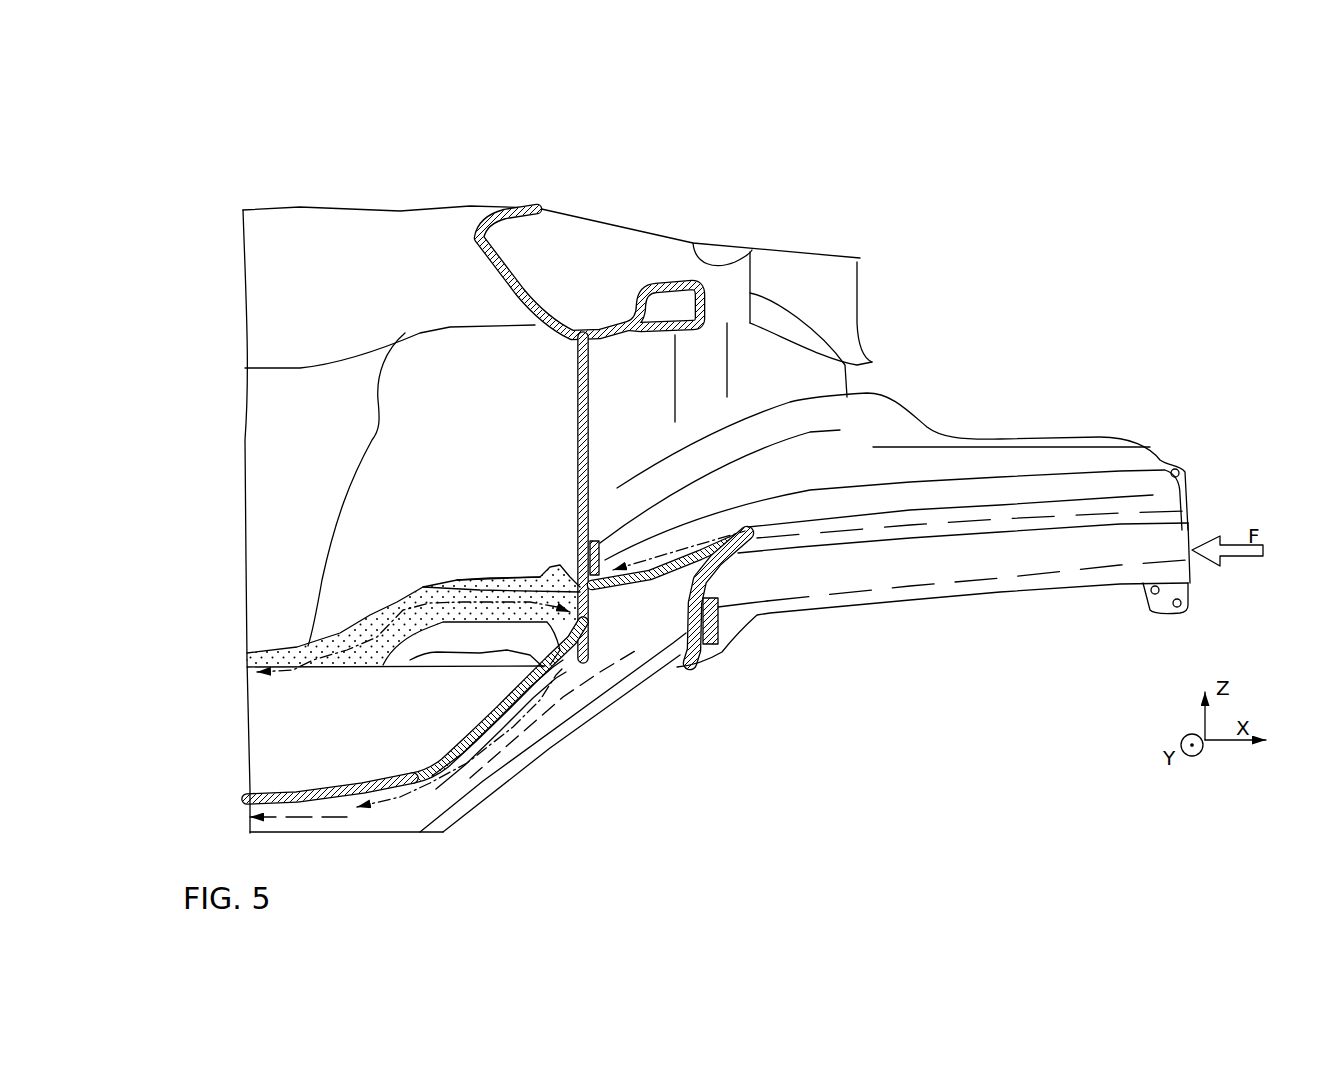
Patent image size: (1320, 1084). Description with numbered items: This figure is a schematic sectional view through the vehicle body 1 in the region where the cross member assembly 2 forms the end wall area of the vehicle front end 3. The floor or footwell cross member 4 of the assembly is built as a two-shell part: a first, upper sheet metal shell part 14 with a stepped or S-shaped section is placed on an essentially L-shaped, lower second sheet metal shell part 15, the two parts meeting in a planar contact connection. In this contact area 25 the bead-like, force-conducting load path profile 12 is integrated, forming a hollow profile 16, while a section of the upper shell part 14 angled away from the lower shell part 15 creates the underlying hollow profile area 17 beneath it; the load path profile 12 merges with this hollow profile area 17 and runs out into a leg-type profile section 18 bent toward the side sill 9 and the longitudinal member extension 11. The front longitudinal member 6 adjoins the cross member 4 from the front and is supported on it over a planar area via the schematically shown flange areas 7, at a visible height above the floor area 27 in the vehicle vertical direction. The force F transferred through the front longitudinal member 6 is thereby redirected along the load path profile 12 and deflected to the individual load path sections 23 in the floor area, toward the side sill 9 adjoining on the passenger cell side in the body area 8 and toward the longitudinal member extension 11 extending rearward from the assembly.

The vehicle body 1 is at (617, 197).
The cross member assembly 2 is at (462, 397).
The vehicle front end 3 is at (797, 210).
The floor or footwell cross member 4 is at (341, 704).
The front longitudinal member 6 is at (1036, 511).
The flange areas 7 is at (598, 557).
The wheel house 8 is at (293, 530).
The side sill 9 is at (250, 662).
The longitudinal member extension 11 is at (459, 829).
The load path profile 12 is at (505, 578).
The first sheet metal shell part 14 is at (502, 701).
The second sheet metal shell part 15 is at (557, 700).
The hollow profile 16 is at (567, 672).
The hollow profile area 17 is at (492, 730).
The leg-type profile section 18 is at (352, 647).
The load path 23 is at (399, 612).
The reinforcement strip 25 is at (523, 587).
The floor area 27 is at (253, 783).